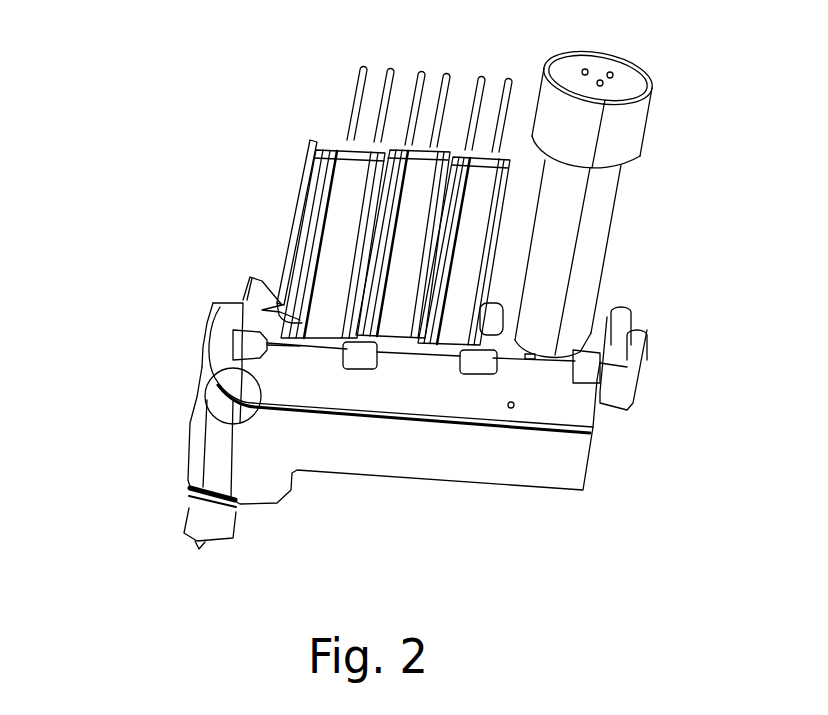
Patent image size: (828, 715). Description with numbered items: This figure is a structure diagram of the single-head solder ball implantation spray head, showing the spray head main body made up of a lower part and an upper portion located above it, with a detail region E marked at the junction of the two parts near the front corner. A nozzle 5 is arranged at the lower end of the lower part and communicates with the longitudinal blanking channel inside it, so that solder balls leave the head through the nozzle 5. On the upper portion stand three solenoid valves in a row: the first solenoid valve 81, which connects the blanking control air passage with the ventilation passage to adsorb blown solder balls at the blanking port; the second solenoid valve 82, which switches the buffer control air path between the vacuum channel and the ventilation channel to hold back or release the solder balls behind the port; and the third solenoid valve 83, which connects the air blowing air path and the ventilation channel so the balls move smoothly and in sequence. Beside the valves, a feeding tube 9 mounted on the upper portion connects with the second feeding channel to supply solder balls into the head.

The detail region E is at (203, 393).
The nozzle 5 is at (190, 513).
The first solenoid valve 81 is at (337, 138).
The second solenoid valve 82 is at (423, 150).
The third solenoid valve 83 is at (486, 155).
The feeding tube 9 is at (612, 203).